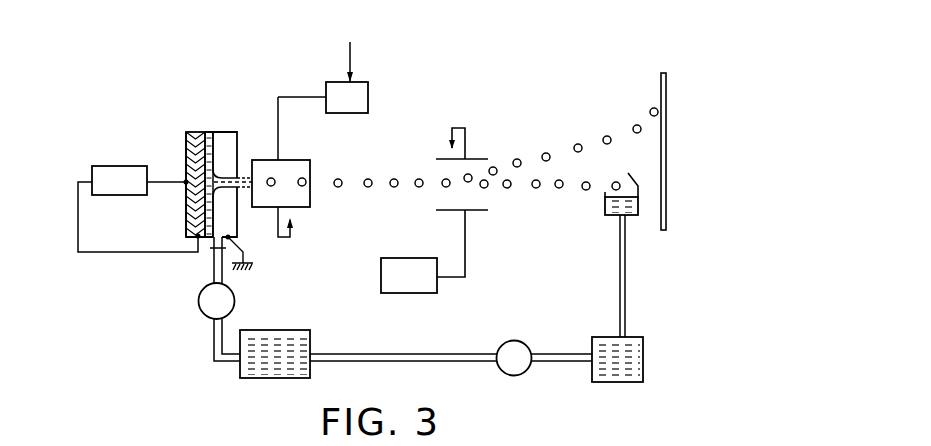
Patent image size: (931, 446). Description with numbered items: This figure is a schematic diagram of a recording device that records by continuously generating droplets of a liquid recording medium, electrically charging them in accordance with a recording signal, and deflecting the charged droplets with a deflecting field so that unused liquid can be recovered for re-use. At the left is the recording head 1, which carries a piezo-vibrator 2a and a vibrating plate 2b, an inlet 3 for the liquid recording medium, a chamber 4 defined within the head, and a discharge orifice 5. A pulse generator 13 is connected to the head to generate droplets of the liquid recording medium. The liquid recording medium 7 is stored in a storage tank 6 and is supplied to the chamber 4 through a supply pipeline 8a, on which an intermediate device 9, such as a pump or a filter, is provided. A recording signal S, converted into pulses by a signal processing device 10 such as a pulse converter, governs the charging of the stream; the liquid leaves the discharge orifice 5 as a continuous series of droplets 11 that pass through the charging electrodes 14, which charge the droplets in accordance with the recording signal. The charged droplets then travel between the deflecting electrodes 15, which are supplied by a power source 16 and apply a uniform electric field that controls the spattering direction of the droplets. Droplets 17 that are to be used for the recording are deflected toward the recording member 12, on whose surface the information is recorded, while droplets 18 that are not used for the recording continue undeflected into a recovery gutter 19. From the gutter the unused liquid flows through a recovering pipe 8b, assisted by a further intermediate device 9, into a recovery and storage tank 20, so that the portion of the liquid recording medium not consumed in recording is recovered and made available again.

The recording head 1 is at (231, 131).
The piezo-vibrator 2a is at (186, 135).
The vibrating plate 2b is at (203, 132).
The inlet 3 is at (228, 237).
The chamber 4 is at (213, 138).
The discharge orifice 5 is at (250, 192).
The storage tank 6 is at (310, 340).
The liquid recording medium 7 is at (260, 337).
The supply pipeline 8a is at (213, 271).
The recovering pipe 8b is at (428, 353).
The intermediate device 9 is at (198, 309).
The signal processing device 10 is at (368, 92).
The droplets 11 is at (275, 178).
The recording member 12 is at (667, 88).
The pulse generator 13 is at (104, 166).
The charging electrodes 14 is at (259, 160).
The deflecting electrodes 15 is at (481, 157).
The power source 16 is at (381, 269).
The droplets to be used for recording 17 is at (633, 126).
The droplets not used for recording 18 is at (583, 189).
The recovery gutter 19 is at (632, 215).
The recovery and storage tank 20 is at (643, 340).